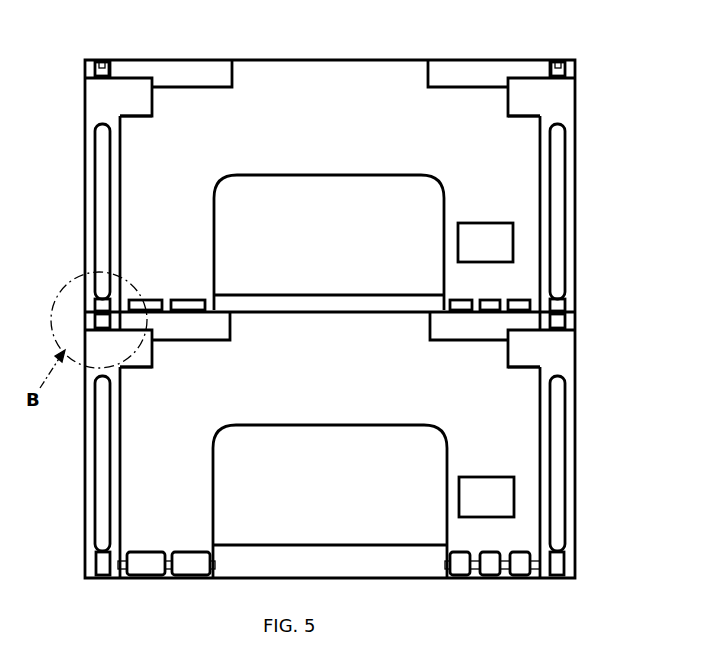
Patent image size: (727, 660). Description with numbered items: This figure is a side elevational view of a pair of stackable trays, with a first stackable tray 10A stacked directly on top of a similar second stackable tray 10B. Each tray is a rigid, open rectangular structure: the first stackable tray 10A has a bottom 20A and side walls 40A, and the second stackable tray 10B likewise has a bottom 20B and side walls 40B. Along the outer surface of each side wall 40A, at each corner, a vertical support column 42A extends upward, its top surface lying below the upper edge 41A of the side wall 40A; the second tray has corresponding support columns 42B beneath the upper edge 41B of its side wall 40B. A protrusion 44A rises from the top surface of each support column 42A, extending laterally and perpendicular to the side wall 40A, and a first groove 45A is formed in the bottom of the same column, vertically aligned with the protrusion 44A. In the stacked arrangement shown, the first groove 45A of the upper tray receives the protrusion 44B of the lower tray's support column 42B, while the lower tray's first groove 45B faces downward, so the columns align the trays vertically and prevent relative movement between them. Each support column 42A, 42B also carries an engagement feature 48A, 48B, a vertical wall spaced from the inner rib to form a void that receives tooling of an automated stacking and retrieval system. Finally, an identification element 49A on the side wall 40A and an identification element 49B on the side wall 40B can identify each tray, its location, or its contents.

The first stackable tray 10A is at (612, 145).
The second stackable tray 10B is at (618, 393).
The bottom 20A is at (320, 293).
The bottom 20B is at (328, 545).
The side wall 40A is at (345, 128).
The side wall 40B is at (345, 388).
The upper edge 41A is at (158, 60).
The upper edge 41B is at (182, 314).
The vertical support column 42A is at (106, 108).
The vertical support column 42B is at (107, 356).
The protrusion 44A is at (100, 62).
The protrusion 44B is at (102, 320).
The first groove 45A is at (102, 300).
The first groove 45B is at (104, 575).
The engagement feature 48A is at (142, 117).
The engagement feature 48B is at (142, 369).
The identification element 49A is at (497, 240).
The identification element 49B is at (497, 495).